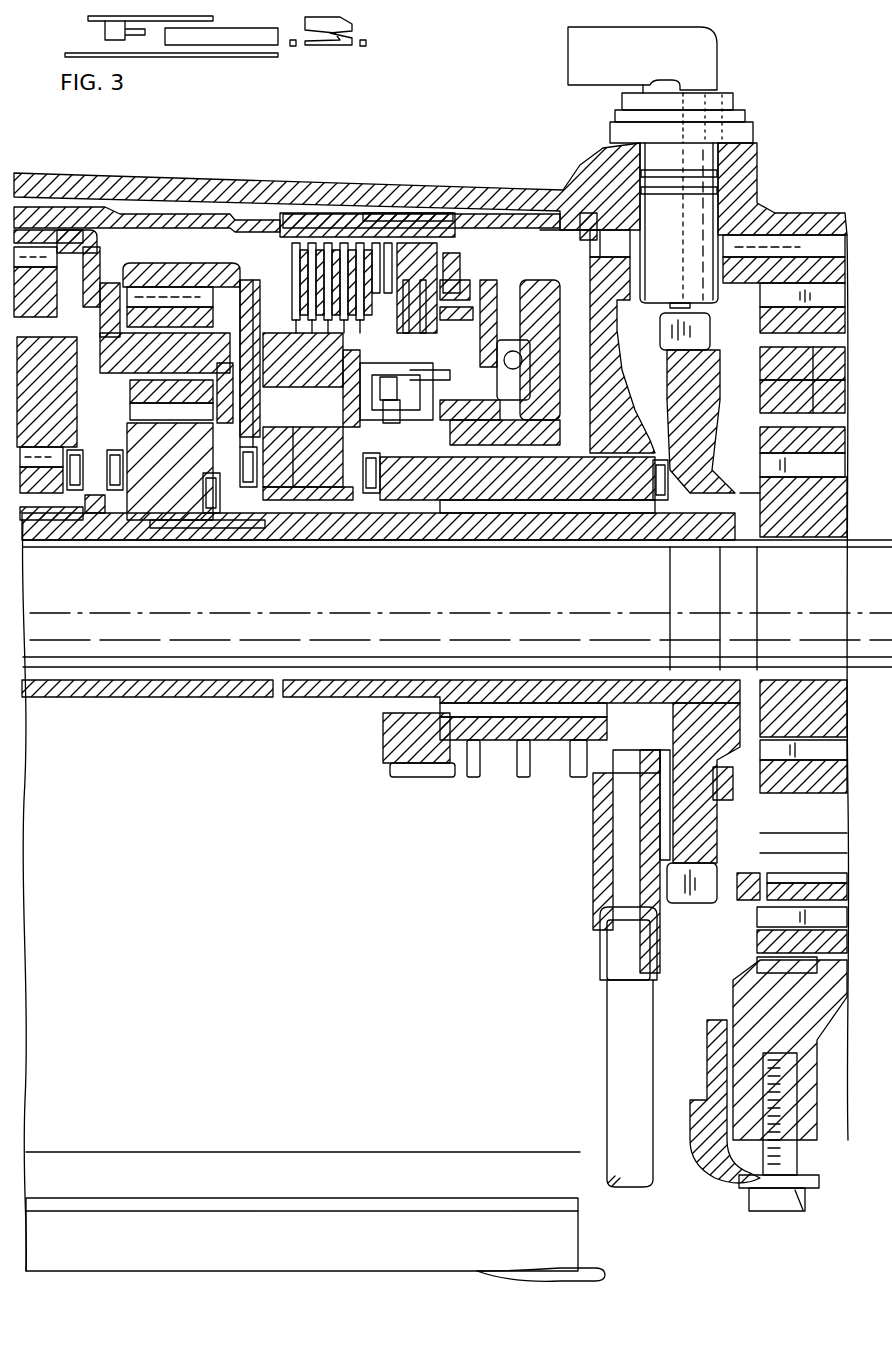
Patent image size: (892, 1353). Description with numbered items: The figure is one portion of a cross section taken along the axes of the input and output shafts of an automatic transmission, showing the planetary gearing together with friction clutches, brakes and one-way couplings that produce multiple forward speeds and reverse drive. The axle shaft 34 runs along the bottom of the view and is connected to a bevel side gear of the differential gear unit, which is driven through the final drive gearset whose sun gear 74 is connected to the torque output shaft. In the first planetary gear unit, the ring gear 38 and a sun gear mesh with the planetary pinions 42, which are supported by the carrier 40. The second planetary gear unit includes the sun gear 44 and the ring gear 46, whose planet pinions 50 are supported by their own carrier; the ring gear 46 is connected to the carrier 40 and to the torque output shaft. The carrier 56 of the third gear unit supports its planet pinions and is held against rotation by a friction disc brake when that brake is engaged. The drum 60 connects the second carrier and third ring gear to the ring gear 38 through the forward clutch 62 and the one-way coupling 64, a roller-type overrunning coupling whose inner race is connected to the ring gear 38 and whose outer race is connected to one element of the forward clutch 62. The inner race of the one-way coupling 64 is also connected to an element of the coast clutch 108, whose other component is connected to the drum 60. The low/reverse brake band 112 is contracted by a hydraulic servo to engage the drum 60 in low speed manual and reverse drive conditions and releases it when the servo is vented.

The axle shaft 34 is at (305, 612).
The ring gear 38 is at (200, 267).
The carrier 40 is at (273, 260).
The planetary pinions 42 is at (167, 312).
The sun gear 44 is at (57, 493).
The ring gear 46 is at (58, 230).
The planet pinions 50 is at (53, 287).
The carrier 56 is at (145, 497).
The drum 60 is at (117, 220).
The forward clutch 62 is at (310, 240).
The one-way coupling 64 is at (313, 418).
The sun gear 74 is at (780, 510).
The coast clutch 108 is at (440, 330).
The low/reverse brake band 112 is at (363, 213).